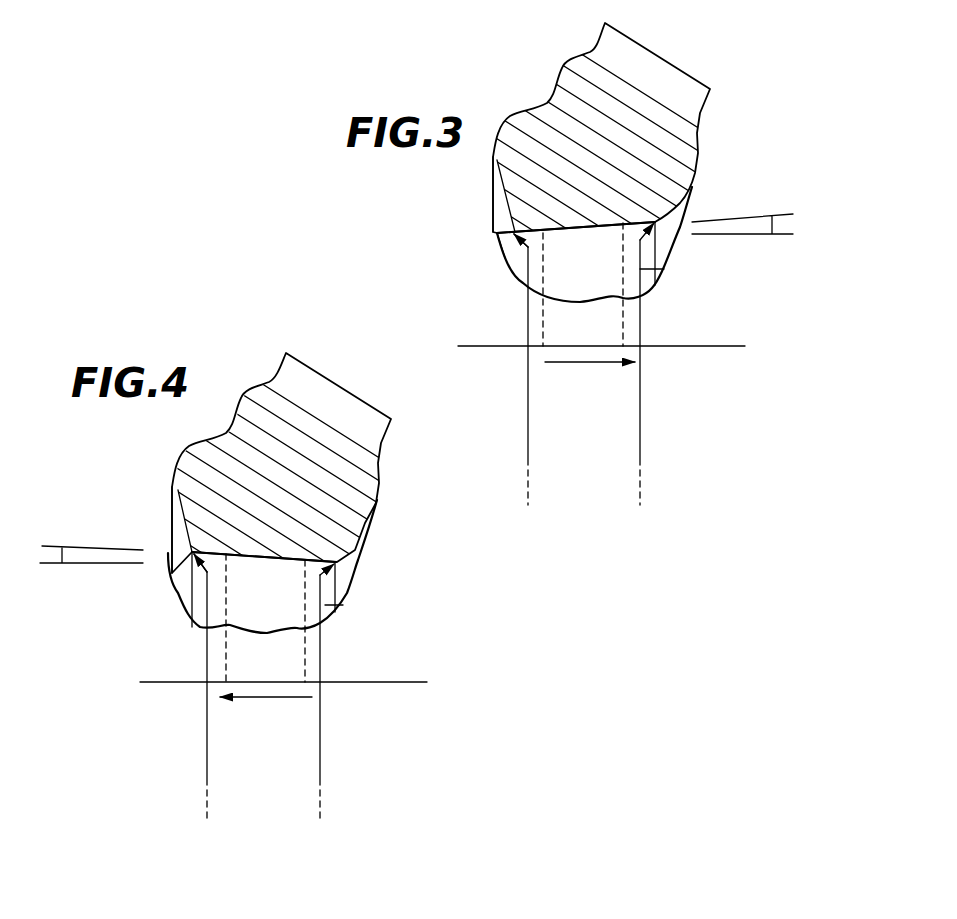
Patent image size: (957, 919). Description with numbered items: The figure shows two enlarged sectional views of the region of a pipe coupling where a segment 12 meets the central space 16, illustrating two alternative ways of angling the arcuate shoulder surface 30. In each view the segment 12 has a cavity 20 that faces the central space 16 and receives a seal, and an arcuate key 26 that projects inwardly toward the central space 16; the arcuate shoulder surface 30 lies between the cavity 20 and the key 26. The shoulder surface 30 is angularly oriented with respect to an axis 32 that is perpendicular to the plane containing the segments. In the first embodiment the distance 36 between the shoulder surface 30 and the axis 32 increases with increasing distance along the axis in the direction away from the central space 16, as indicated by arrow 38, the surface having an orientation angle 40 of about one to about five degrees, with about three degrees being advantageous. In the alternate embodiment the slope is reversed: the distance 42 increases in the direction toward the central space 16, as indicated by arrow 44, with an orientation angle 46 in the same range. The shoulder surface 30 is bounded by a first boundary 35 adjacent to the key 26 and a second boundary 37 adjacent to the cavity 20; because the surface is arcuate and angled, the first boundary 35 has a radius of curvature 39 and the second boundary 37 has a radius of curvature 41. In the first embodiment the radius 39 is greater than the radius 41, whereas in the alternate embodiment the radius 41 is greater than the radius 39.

In FIG. 3, the segment 12 is at (658, 58).
In FIG. 4, the segment 12 is at (370, 468).
In FIG. 3, the central space 16 is at (430, 252).
In FIG. 4, the central space 16 is at (45, 613).
In FIG. 3, the cavity 20 is at (503, 252).
In FIG. 4, the cavity 20 is at (173, 530).
In FIG. 3, the arcuate key 26 is at (655, 262).
In FIG. 4, the arcuate key 26 is at (338, 592).
In FIG. 3, the arcuate shoulder surface 30 is at (664, 269).
In FIG. 4, the arcuate shoulder surface 30 is at (343, 605).
In FIG. 3, the axis 32 is at (722, 346).
In FIG. 4, the axis 32 is at (412, 682).
In FIG. 3, the first boundary 35 is at (692, 172).
In FIG. 4, the first boundary 35 is at (356, 548).
In FIG. 3, the distance 36 is at (527, 300).
In FIG. 3, the second boundary 37 is at (493, 229).
In FIG. 4, the second boundary 37 is at (172, 551).
In FIG. 3, the arrow 38 is at (585, 363).
In FIG. 3, the radius of curvature 39 is at (640, 428).
In FIG. 4, the radius of curvature 39 is at (320, 738).
In FIG. 3, the orientation angle 40 is at (773, 226).
In FIG. 3, the radius of curvature 41 is at (528, 428).
In FIG. 4, the radius of curvature 41 is at (207, 757).
In FIG. 4, the distance 42 is at (197, 647).
In FIG. 4, the arrow 44 is at (257, 697).
In FIG. 4, the orientation angle 46 is at (62, 556).